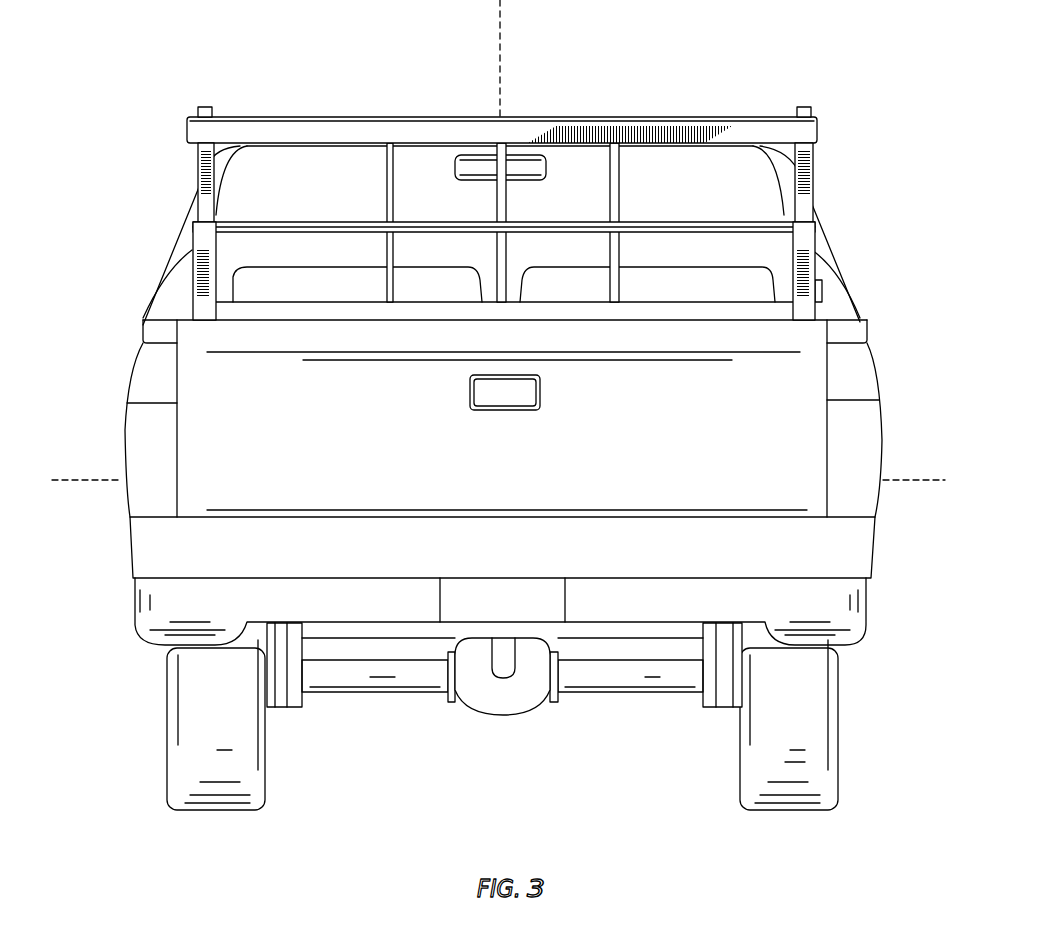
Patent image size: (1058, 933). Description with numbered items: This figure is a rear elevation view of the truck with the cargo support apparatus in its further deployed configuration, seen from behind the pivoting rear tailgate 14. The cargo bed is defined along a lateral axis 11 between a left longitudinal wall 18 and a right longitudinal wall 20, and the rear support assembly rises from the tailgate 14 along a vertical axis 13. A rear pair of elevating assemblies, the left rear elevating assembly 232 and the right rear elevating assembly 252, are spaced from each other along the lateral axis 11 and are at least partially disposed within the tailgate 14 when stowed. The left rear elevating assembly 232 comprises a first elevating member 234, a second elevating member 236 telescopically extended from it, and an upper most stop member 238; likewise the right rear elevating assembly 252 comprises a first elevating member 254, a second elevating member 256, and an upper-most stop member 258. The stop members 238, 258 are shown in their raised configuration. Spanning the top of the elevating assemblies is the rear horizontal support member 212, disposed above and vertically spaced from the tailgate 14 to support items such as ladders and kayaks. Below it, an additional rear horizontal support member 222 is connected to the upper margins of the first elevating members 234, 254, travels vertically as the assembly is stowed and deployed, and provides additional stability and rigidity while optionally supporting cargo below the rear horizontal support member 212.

The lateral axis 11 is at (88, 480).
The vertical axis 13 is at (502, 78).
The rear tailgate 14 is at (805, 373).
The left longitudinal wall 18 is at (125, 497).
The right longitudinal wall 20 is at (880, 487).
The rear horizontal support member 212 is at (366, 132).
The additional rear horizontal support member 222 is at (364, 221).
The left rear elevating assembly 232 is at (130, 179).
The first elevating member 234 is at (192, 250).
The second elevating member 236 is at (198, 152).
The upper most stop member 238 is at (203, 106).
The right rear elevating assembly 252 is at (854, 176).
The first elevating member 254 is at (810, 233).
The second elevating member 256 is at (813, 163).
The upper-most stop member 258 is at (804, 106).